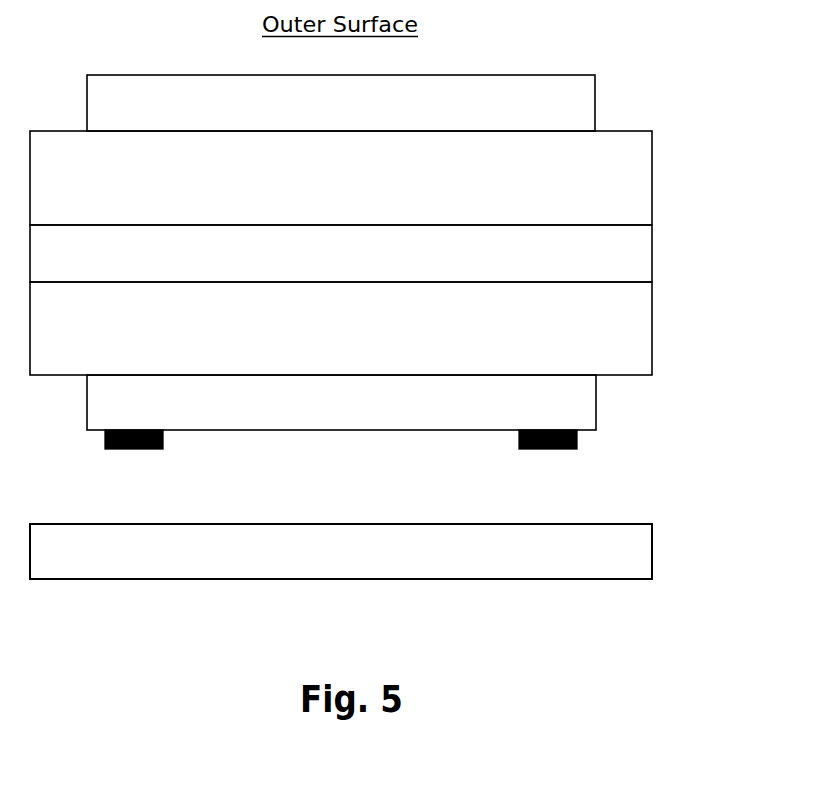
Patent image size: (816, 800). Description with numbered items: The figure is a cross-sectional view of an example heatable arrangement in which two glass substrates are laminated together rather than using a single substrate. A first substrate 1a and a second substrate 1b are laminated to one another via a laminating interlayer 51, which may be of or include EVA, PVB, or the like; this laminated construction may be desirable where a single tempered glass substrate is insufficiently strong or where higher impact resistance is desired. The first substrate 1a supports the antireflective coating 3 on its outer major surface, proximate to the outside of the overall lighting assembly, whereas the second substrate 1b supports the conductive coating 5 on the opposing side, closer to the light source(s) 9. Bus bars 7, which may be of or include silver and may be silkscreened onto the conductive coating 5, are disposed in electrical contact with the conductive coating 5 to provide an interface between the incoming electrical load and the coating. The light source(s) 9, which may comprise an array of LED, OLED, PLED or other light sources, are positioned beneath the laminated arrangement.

The antireflective coating 3 is at (595, 103).
The first substrate 1a is at (652, 178).
The laminating interlayer 51 is at (652, 253).
The second substrate 1b is at (652, 328).
The conductive coating 5 is at (596, 403).
The bus bars 7 is at (105, 438).
The light source(s) 9 is at (652, 552).